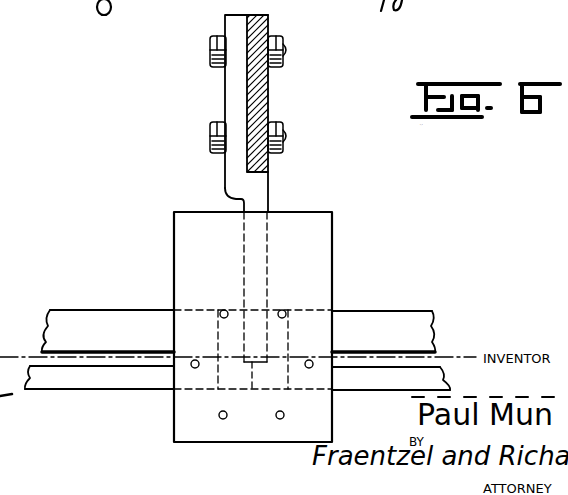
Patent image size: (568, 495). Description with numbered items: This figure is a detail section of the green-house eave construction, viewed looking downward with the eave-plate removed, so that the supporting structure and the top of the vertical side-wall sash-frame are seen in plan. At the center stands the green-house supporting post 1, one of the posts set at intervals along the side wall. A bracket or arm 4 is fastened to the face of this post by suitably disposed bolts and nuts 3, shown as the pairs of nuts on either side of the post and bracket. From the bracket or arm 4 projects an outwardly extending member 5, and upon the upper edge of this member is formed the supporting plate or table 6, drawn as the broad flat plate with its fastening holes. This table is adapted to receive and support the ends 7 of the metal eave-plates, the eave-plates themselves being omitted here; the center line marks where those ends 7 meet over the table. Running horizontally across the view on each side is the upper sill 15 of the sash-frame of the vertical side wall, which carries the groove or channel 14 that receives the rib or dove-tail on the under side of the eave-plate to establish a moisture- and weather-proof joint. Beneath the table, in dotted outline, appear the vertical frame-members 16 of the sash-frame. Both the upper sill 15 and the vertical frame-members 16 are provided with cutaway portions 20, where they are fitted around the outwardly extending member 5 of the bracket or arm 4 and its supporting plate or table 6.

The green-house supporting post 1 is at (258, 96).
The bolts and nuts 3 is at (278, 43).
The bracket or arm 4 is at (228, 101).
The outwardly extending member 5 is at (260, 208).
The supporting plate or table 6 is at (320, 238).
The ends of eave-plates 7 is at (241, 342).
The groove or channel 14 is at (102, 362).
The upper sill 15 is at (112, 318).
The vertical frame-members 16 is at (218, 380).
The cutaway portions 20 is at (262, 366).